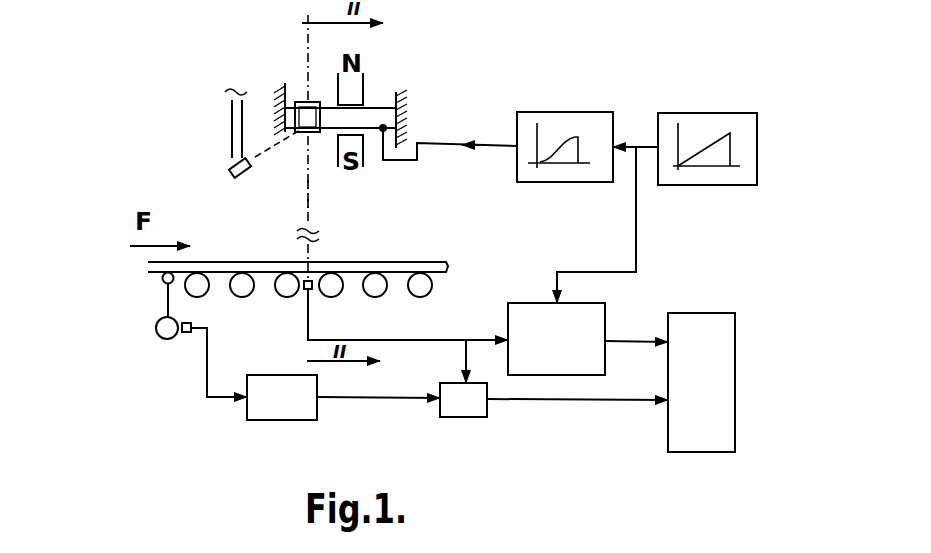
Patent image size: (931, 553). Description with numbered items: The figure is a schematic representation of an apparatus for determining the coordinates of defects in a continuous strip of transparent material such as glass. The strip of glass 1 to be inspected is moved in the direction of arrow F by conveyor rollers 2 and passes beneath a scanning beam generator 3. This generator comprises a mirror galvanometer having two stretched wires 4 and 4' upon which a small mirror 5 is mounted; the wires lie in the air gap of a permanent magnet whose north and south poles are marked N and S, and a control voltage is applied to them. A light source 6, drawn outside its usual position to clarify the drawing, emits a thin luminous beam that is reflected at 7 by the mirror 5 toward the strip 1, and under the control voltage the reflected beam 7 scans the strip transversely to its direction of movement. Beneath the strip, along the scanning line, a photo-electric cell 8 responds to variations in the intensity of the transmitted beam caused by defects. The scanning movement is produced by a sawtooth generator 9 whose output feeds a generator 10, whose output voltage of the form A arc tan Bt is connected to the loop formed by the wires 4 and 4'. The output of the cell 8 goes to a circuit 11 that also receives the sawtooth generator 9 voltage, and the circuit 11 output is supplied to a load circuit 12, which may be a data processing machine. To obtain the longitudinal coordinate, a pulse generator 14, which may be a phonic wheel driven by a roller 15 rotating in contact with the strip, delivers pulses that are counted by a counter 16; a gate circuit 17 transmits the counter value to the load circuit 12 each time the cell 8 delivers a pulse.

The strip of glass 1 is at (427, 268).
The conveyor rollers 2 is at (243, 296).
The scanning beam generator 3 is at (385, 82).
The stretched wire 4 is at (380, 91).
The stretched wire 4' is at (444, 176).
The small mirror 5 is at (302, 103).
The light source 6 is at (237, 177).
The reflected beam 7 is at (309, 194).
The photo-electric cell 8 is at (298, 298).
The sawtooth generator 9 is at (693, 113).
The generator 10 is at (550, 112).
The circuit 11 is at (608, 306).
The load circuit 12 is at (680, 452).
The pulse generator 14 is at (167, 342).
The roller 15 is at (182, 268).
The counter 16 is at (275, 421).
The gate circuit 17 is at (468, 406).